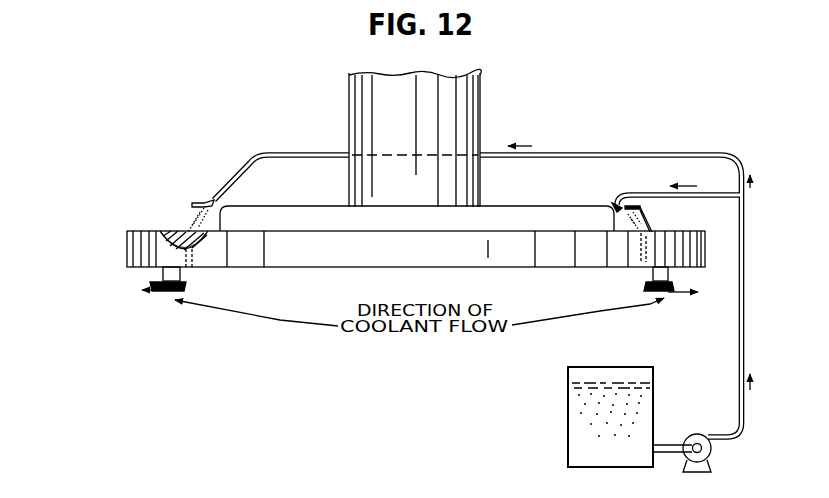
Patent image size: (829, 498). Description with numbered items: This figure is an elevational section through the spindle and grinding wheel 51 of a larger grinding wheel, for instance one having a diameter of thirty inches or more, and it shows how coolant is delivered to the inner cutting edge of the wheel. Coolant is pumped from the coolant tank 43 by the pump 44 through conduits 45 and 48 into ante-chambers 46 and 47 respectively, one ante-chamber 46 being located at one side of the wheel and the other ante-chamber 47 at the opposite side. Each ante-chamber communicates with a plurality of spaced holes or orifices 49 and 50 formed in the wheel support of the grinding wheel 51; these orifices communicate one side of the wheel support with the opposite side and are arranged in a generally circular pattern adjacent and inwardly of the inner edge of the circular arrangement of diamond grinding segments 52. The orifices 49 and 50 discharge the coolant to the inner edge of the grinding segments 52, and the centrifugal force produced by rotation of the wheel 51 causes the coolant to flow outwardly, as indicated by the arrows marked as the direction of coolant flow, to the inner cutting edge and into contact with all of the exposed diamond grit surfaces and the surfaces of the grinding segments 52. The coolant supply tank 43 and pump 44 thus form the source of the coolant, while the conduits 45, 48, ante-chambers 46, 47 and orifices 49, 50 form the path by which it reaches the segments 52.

The coolant tank 43 is at (573, 421).
The pump 44 is at (686, 457).
The conduit 45 is at (306, 147).
The ante-chamber 46 is at (200, 203).
The ante-chamber 47 is at (644, 208).
The conduit 48 is at (633, 193).
The orifice 49 is at (157, 233).
The orifice 50 is at (640, 256).
The grinding wheel 51 is at (168, 228).
The grinding segments 52 is at (670, 288).